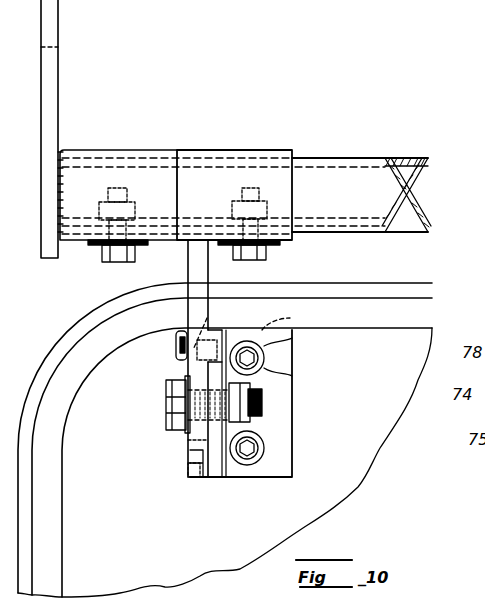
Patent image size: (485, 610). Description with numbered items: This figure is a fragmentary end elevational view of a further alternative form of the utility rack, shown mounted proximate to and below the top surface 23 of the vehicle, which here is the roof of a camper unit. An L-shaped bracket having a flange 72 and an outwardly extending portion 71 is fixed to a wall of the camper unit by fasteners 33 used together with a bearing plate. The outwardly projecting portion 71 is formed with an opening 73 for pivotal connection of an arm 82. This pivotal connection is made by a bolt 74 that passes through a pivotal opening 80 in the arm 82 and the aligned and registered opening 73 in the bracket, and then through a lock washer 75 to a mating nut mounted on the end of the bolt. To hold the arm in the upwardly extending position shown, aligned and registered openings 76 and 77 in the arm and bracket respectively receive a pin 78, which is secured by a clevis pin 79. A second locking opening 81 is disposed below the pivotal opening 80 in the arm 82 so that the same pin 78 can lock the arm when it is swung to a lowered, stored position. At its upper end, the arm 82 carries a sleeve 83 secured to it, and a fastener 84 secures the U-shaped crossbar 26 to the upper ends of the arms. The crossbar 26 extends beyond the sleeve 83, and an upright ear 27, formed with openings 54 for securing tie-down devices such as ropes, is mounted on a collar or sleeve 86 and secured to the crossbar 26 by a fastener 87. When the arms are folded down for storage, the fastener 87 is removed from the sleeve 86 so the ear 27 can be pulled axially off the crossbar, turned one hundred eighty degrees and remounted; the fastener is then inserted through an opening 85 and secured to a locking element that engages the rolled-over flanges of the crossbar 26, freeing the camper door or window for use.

The top surface 23 is at (375, 283).
The crossbar 26 is at (340, 158).
The ear 27 is at (58, 76).
The fasteners 33 is at (292, 442).
The openings 54 is at (53, 46).
The outwardly extending portion 71 is at (216, 478).
The flange 72 is at (292, 413).
The opening 73 is at (190, 450).
The bolt 74 is at (264, 400).
The lock washer 75 is at (264, 378).
The opening 76 is at (212, 314).
The opening 77 is at (268, 328).
The pin 78 is at (266, 340).
The clevis pin 79 is at (178, 356).
The pivotal opening 80 is at (168, 405).
The second locking opening 81 is at (187, 465).
The arm 82 is at (208, 254).
The sleeve 83 is at (238, 150).
The fastener 84 is at (281, 249).
The opening 85 is at (142, 160).
The sleeve 86 is at (93, 152).
The fastener 87 is at (106, 258).